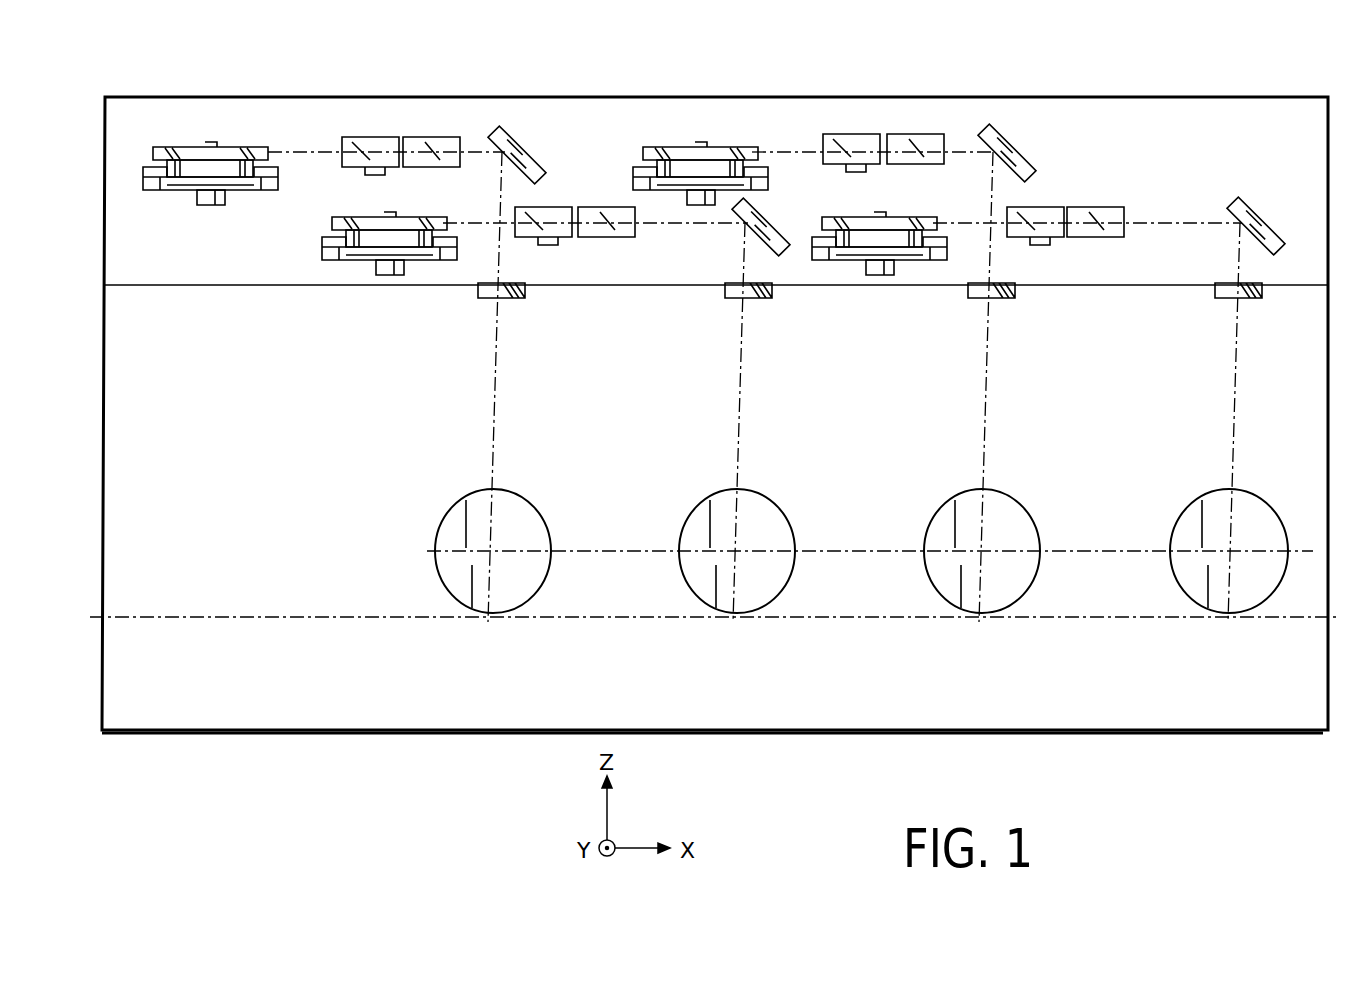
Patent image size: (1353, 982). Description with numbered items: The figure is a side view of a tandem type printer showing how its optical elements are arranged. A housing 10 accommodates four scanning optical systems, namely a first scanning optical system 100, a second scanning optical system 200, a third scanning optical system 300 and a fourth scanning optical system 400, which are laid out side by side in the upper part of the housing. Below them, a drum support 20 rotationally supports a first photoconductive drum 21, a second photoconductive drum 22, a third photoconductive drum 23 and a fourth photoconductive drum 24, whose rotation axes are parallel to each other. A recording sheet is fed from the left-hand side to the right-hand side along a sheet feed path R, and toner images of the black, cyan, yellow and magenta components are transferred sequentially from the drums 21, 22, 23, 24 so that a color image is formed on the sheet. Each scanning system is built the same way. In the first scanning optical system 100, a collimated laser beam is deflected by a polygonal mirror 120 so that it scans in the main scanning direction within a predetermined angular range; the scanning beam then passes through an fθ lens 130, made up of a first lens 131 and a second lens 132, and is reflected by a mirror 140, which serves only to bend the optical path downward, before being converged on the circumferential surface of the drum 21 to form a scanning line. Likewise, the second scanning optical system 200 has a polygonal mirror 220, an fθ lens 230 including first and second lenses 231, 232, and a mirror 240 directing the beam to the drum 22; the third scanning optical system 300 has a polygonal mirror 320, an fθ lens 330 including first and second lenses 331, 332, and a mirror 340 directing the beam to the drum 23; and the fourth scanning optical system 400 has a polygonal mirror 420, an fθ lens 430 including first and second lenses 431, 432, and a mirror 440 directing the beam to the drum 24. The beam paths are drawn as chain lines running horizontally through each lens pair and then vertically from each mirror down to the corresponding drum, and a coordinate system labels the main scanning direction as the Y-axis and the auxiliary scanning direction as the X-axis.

The housing 10 is at (152, 118).
The drum support 20 is at (243, 703).
The sheet feed path R is at (272, 616).
The first scanning optical system 100 is at (300, 149).
The polygonal mirror 120 is at (228, 147).
The fθ lens 130 is at (400, 91).
The first lens 131 is at (372, 140).
The second lens 132 is at (440, 140).
The mirror 140 is at (565, 146).
The second scanning optical system 200 is at (482, 226).
The polygonal mirror 220 is at (405, 224).
The fθ lens 230 is at (580, 294).
The first lens 231 is at (530, 238).
The second lens 232 is at (597, 238).
The mirror 240 is at (800, 212).
The third scanning optical system 300 is at (780, 149).
The polygonal mirror 320 is at (713, 145).
The fθ lens 330 is at (883, 89).
The first lens 331 is at (858, 135).
The second lens 332 is at (925, 135).
The mirror 340 is at (1050, 147).
The fourth scanning optical system 400 is at (968, 226).
The polygonal mirror 420 is at (895, 222).
The fθ lens 430 is at (1070, 294).
The first lens 431 is at (1020, 238).
The second lens 432 is at (1087, 238).
The mirror 440 is at (1293, 215).
The first photoconductive drum 21 is at (450, 567).
The second photoconductive drum 22 is at (693, 567).
The third photoconductive drum 23 is at (940, 567).
The fourth photoconductive drum 24 is at (1185, 567).